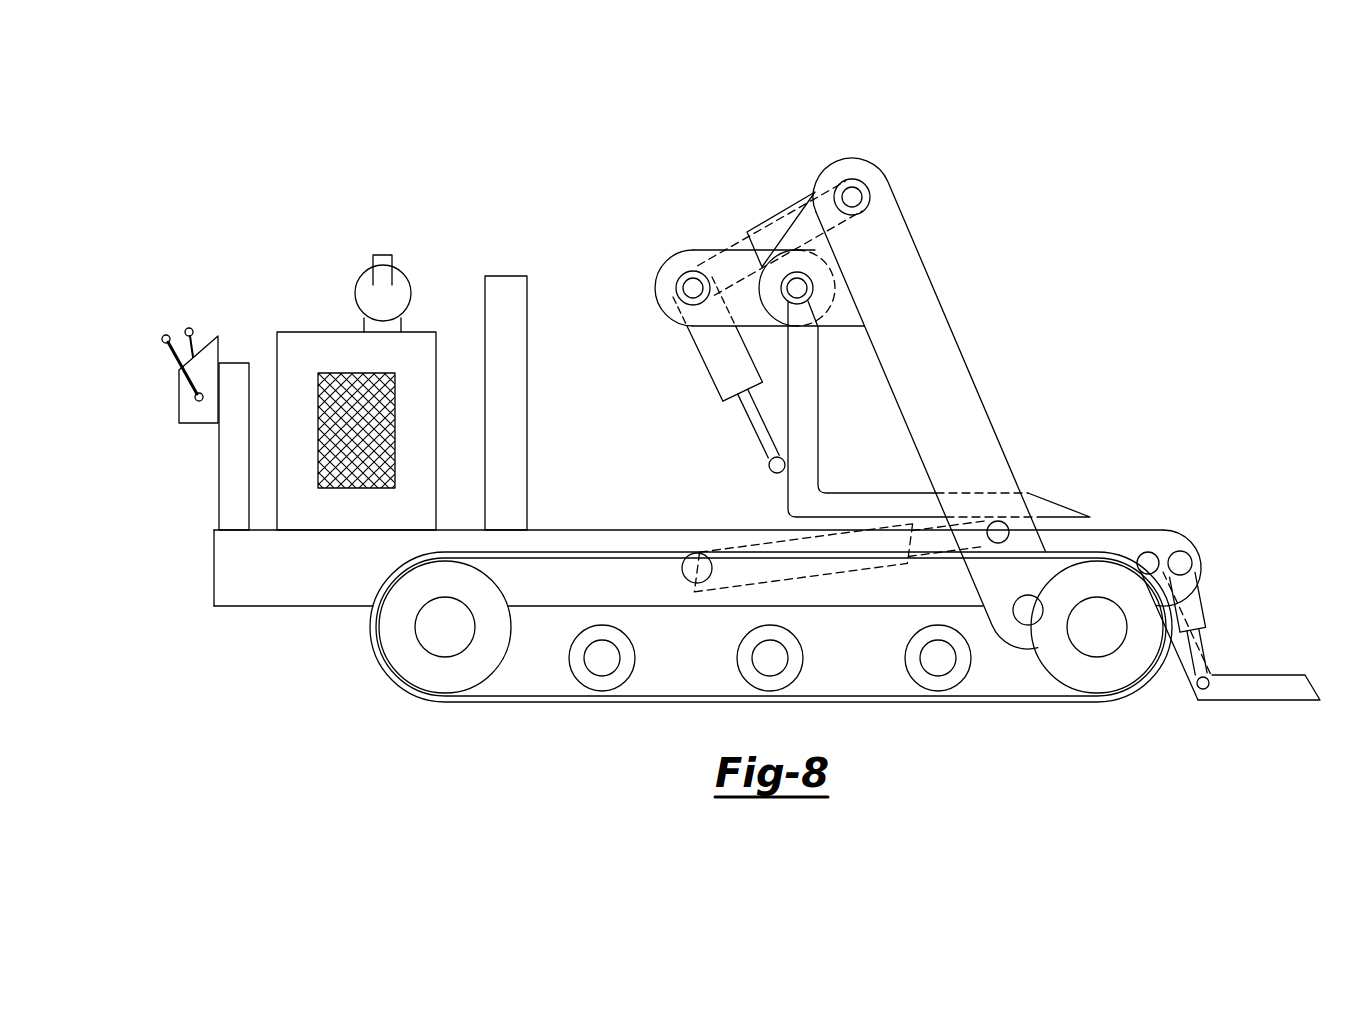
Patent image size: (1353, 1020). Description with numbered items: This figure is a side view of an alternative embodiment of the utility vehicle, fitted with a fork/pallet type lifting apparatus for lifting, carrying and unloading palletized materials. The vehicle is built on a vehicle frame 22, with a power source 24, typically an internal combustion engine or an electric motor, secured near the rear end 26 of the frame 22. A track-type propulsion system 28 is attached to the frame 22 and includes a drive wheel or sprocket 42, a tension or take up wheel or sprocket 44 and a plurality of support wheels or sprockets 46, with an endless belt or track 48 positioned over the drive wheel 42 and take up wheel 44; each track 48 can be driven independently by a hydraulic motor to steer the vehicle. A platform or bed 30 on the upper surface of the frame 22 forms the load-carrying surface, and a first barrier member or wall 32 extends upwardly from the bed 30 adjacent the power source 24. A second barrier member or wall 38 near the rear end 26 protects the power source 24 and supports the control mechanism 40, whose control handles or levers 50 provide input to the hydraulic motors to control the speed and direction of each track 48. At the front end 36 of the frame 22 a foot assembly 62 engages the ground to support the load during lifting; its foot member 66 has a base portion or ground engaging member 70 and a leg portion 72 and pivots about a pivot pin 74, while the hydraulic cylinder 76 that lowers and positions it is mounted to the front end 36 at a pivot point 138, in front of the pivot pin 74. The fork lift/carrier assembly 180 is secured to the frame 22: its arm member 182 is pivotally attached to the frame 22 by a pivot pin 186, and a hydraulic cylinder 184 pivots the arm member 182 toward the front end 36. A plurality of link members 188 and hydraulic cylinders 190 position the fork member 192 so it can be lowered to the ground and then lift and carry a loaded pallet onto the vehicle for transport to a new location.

The vehicle frame 22 is at (270, 620).
The power source 24 is at (303, 322).
The rear end 26 is at (213, 577).
The propulsion system 28 is at (420, 712).
The platform or bed 30 is at (602, 528).
The first barrier member or wall 32 is at (503, 296).
The front end 36 is at (1203, 560).
The second barrier member or wall 38 is at (233, 372).
The control mechanism 40 is at (190, 435).
The drive wheel or sprocket 42 is at (410, 665).
The tension or take up wheel or sprocket 44 is at (1115, 665).
The support wheels or sprockets 46 is at (620, 655).
The endless belt or track 48 is at (517, 705).
The control handles or levers 50 is at (189, 328).
The foot assembly 62 is at (1245, 610).
The first foot member 66 is at (1275, 686).
The base portion or ground engaging member 70 is at (1258, 680).
The leg portion 72 is at (1183, 650).
The pivot pin or stub shaft 74 is at (1150, 553).
The hydraulic cylinder 76 is at (1195, 600).
The pivot point 138 is at (1183, 555).
The fork lift/carrier assembly 180 is at (889, 444).
The arm member 182 is at (950, 373).
The hydraulic cylinder 184 is at (757, 570).
The pivot pin 186 is at (1028, 625).
The link members 188 is at (695, 262).
The hydraulic cylinders 190 is at (760, 233).
The fork member 192 is at (1045, 500).